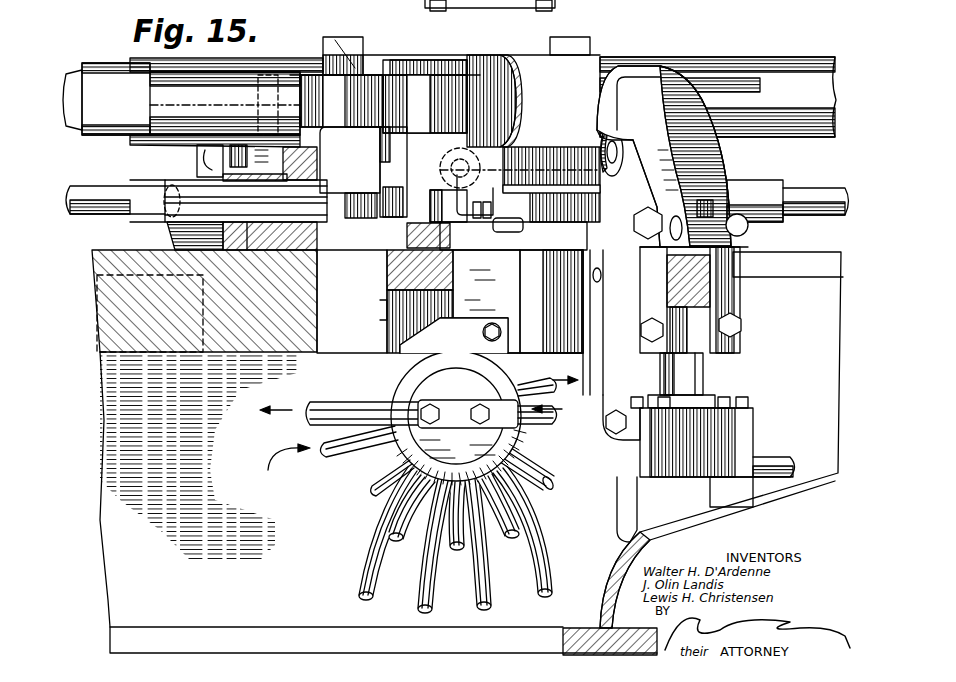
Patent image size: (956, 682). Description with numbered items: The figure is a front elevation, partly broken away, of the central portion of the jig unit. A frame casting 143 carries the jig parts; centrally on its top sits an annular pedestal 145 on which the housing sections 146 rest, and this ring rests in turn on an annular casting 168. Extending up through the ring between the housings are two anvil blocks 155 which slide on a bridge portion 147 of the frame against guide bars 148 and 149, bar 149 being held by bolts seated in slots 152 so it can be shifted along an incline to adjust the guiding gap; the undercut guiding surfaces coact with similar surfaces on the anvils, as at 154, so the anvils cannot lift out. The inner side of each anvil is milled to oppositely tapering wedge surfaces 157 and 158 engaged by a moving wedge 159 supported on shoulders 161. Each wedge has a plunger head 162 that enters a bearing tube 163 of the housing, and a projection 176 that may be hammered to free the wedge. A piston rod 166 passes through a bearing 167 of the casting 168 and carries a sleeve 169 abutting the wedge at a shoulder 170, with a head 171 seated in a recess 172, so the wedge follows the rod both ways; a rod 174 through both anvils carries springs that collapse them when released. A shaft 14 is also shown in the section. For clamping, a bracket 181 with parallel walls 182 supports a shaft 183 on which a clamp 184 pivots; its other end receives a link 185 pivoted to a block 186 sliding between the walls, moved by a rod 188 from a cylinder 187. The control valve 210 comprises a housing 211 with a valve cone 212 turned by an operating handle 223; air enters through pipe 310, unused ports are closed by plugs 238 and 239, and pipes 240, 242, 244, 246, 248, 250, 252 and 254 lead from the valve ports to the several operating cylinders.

The shaft 14 is at (221, 113).
The frame casting 143 is at (270, 333).
The annular pedestal 145 is at (287, 150).
The housing sections 146 is at (103, 87).
The bridge portion 147 is at (445, 255).
The guide bar 148 is at (486, 301).
The guide bar 149 is at (477, 240).
The slots 152 is at (488, 9).
The undercut guiding surfaces 154 is at (400, 250).
The anvil blocks 155 is at (468, 66).
The wedge surface 157 is at (410, 77).
The wedge surface 158 is at (438, 220).
The moving wedge 159 is at (372, 72).
The shoulders 161 is at (400, 172).
The plunger head 162 is at (272, 95).
The bearing tube 163 is at (232, 90).
The piston rod 166 is at (82, 217).
The bearing 167 is at (250, 222).
The annular casting 168 is at (554, 213).
The sleeve 169 is at (767, 173).
The shoulder 170 is at (330, 202).
The head 171 is at (345, 238).
The recess 172 is at (350, 172).
The rod 174 is at (432, 165).
The projection 176 is at (343, 66).
The bracket 181 is at (697, 368).
The parallel projections 182 is at (720, 300).
The shaft 183 is at (618, 128).
The clamp 184 is at (655, 118).
The link 185 is at (740, 244).
The block 186 is at (700, 278).
The cylinder 187 is at (637, 505).
The rod 188 is at (727, 322).
The valve 210 is at (458, 418).
The housing 211 is at (505, 357).
The valve cone 212 is at (410, 393).
The operating handle 223 is at (510, 433).
The plug 238 is at (374, 452).
The plug 239 is at (380, 485).
The pipes 240 is at (541, 554).
The pipes 242 is at (491, 580).
The pipes 244 is at (433, 596).
The pipes 246 is at (363, 585).
The pipes 248 is at (551, 486).
The pipes 250 is at (508, 532).
The pipes 252 is at (453, 549).
The pipes 254 is at (397, 534).
The pipe 310 is at (586, 406).